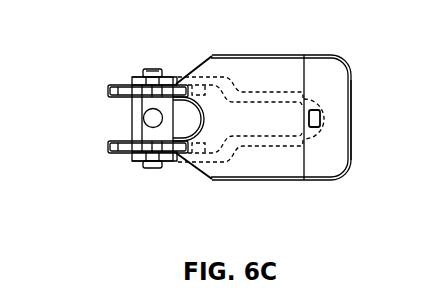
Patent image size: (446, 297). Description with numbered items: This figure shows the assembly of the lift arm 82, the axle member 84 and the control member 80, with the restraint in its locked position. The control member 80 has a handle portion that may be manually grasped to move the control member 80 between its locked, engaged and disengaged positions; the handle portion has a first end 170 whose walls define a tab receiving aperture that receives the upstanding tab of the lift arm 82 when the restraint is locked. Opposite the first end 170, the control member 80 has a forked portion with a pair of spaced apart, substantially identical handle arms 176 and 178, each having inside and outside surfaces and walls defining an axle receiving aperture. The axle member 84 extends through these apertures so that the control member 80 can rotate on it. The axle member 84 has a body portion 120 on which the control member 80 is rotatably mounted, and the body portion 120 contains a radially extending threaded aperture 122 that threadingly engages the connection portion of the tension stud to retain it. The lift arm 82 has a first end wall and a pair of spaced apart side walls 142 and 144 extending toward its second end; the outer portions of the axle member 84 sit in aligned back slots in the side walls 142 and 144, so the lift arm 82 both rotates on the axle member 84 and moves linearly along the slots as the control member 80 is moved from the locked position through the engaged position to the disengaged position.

The control member 80 is at (328, 55).
The lift arm 82 is at (175, 162).
The axle member 84 is at (148, 68).
The body portion 120 is at (115, 143).
The threaded aperture 122 is at (153, 118).
The side wall 142 is at (132, 157).
The side wall 144 is at (128, 81).
The first end 170 is at (354, 121).
The handle arm 176 is at (110, 92).
The handle arm 178 is at (108, 150).